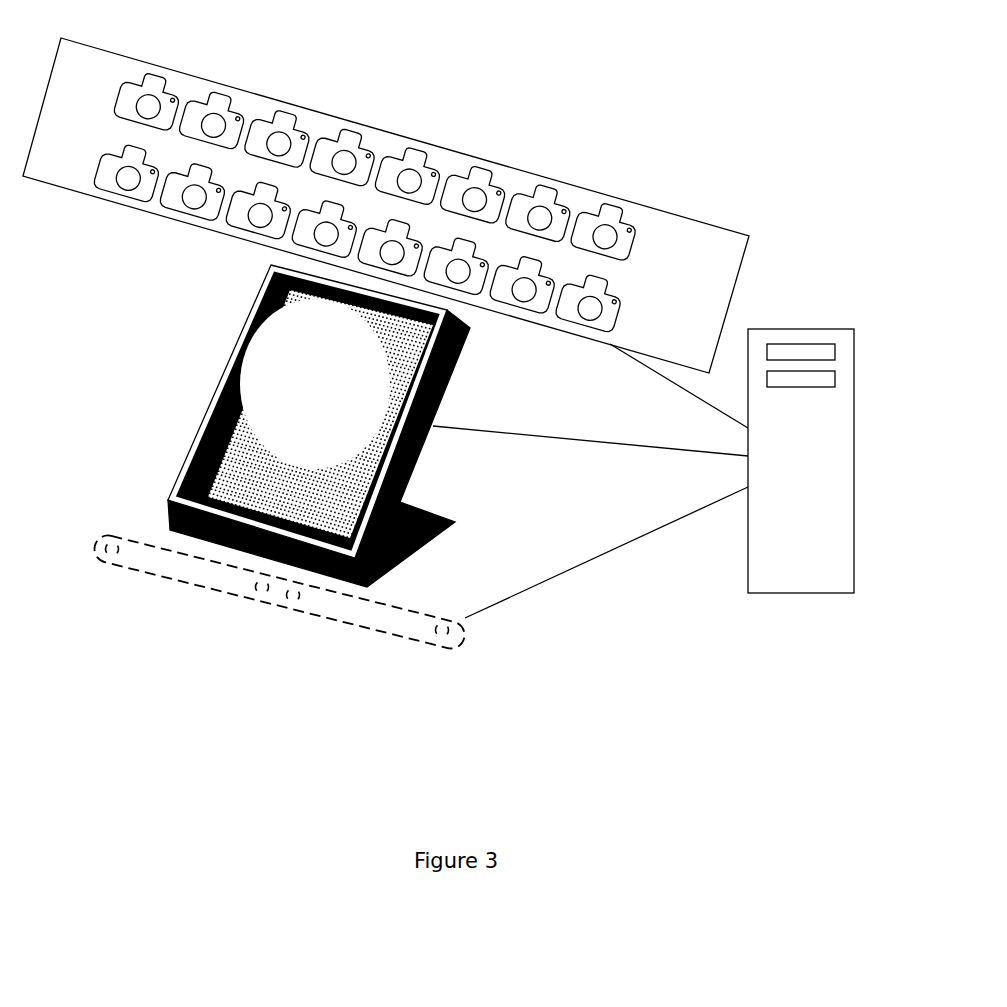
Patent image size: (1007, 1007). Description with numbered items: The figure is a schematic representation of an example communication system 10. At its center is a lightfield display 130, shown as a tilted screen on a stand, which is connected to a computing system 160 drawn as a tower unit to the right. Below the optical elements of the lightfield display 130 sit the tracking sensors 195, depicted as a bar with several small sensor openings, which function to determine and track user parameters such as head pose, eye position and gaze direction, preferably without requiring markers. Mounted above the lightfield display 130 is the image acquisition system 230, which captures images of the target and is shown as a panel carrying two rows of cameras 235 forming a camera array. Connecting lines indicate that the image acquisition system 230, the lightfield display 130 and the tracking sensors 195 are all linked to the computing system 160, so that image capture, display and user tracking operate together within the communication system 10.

The communication system 10 is at (788, 47).
The lightfield display 130 is at (223, 371).
The computing system 160 is at (794, 611).
The tracking sensors 195 is at (256, 615).
The image acquisition system 230 is at (386, 205).
The cameras 235 is at (628, 218).